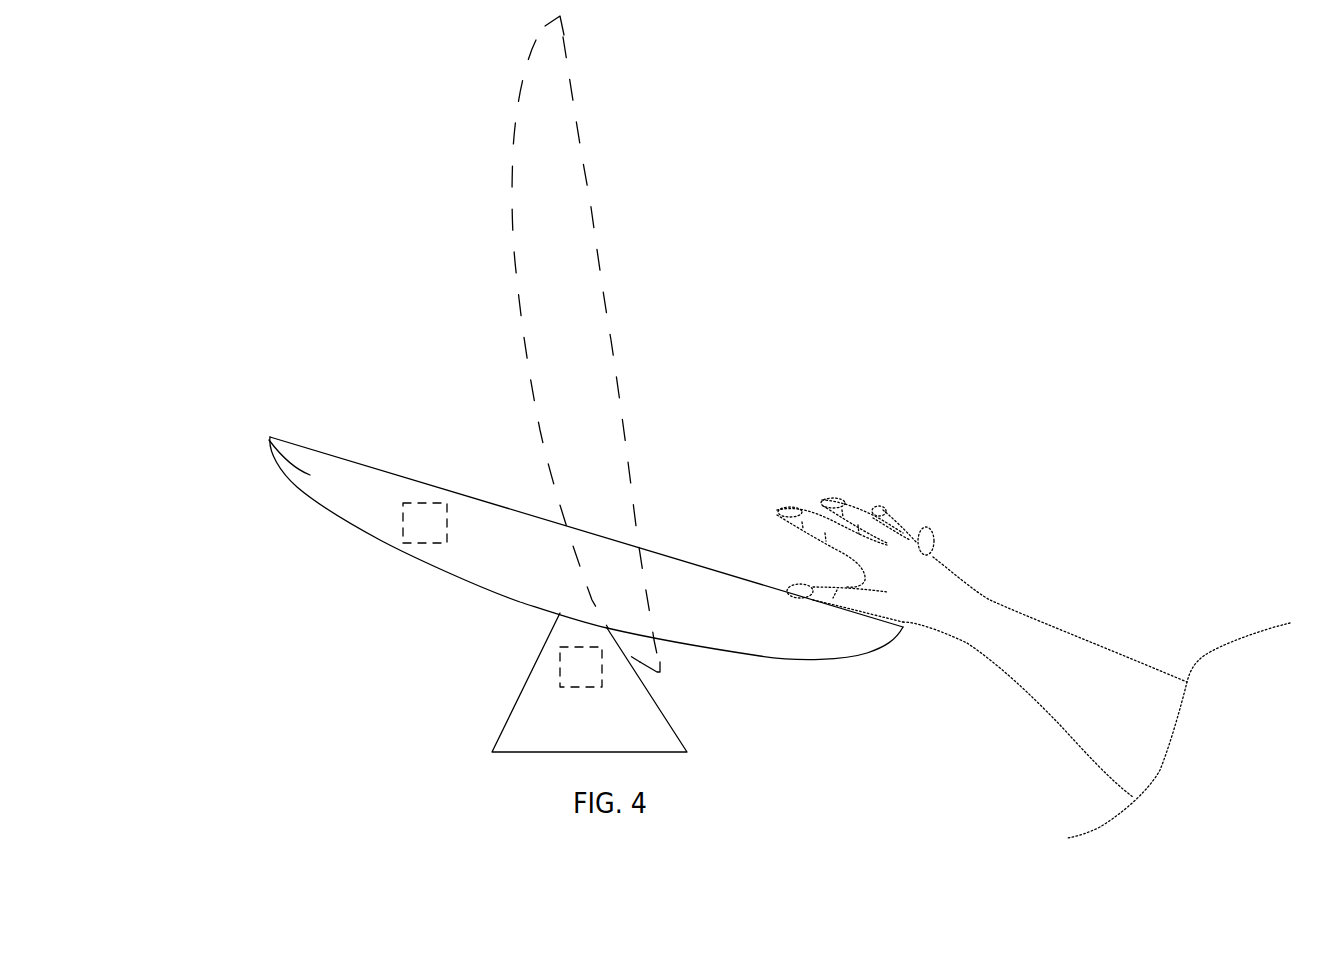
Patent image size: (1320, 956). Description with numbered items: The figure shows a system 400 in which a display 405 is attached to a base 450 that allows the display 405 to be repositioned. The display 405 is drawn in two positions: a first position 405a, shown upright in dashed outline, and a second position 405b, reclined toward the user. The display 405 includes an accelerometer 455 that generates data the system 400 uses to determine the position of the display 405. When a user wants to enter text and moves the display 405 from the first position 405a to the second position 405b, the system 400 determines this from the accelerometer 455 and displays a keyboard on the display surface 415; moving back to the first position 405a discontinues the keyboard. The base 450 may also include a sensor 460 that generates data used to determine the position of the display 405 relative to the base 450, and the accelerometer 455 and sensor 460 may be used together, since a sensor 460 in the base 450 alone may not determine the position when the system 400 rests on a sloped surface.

The system 400 is at (372, 257).
The display 405 is at (509, 344).
The first position 405a is at (510, 187).
The second position 405b is at (270, 437).
The display surface 415 is at (672, 558).
The base 450 is at (513, 735).
The accelerometer 455 is at (430, 517).
The sensor 460 is at (587, 677).